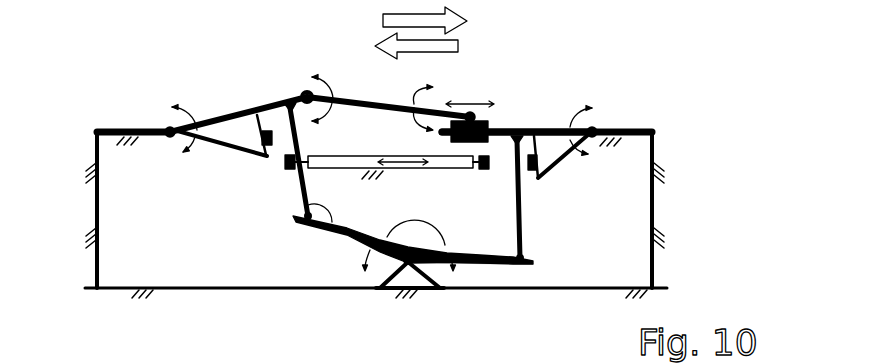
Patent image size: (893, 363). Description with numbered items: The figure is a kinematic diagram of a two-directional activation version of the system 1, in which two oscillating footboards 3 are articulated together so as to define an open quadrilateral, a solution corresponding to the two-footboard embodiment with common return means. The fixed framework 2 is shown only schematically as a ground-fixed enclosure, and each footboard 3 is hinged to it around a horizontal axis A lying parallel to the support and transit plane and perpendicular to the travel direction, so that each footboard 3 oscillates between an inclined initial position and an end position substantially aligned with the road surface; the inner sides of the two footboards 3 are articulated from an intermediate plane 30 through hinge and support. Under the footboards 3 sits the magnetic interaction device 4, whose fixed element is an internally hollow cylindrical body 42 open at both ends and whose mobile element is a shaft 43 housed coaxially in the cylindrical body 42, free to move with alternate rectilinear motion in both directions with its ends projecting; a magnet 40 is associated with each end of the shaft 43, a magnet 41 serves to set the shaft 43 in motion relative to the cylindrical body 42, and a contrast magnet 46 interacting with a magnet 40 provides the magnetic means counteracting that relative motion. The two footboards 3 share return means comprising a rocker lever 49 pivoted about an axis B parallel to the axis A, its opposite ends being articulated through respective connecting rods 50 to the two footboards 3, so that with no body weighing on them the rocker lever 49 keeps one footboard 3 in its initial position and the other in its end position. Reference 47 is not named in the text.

The system 1 is at (100, 51).
The fixed framework 2 is at (97, 203).
The footboard 3 is at (246, 97).
The magnetic interaction device 4 is at (350, 209).
The intermediate plane 30 is at (345, 87).
The magnet 40 is at (296, 170).
The magnet 41 is at (273, 152).
The cylindrical body 42 is at (437, 170).
The shaft 43 is at (479, 170).
The contrast magnet 46 is at (533, 180).
The brace 47 is at (232, 138).
The rocker lever 49 is at (488, 263).
The connecting rod 50 is at (322, 232).
The axis A is at (165, 128).
The axis B is at (408, 266).